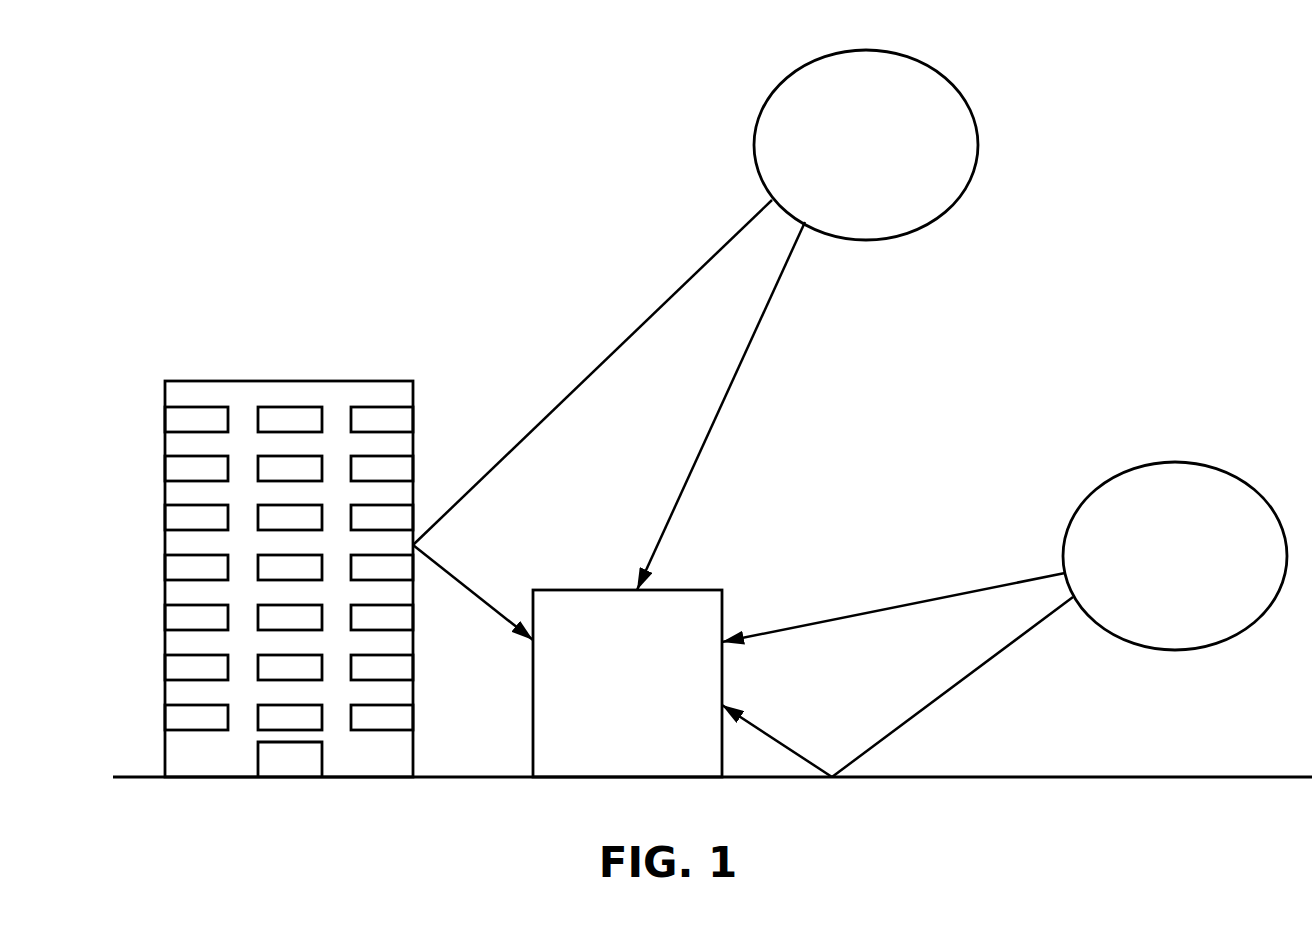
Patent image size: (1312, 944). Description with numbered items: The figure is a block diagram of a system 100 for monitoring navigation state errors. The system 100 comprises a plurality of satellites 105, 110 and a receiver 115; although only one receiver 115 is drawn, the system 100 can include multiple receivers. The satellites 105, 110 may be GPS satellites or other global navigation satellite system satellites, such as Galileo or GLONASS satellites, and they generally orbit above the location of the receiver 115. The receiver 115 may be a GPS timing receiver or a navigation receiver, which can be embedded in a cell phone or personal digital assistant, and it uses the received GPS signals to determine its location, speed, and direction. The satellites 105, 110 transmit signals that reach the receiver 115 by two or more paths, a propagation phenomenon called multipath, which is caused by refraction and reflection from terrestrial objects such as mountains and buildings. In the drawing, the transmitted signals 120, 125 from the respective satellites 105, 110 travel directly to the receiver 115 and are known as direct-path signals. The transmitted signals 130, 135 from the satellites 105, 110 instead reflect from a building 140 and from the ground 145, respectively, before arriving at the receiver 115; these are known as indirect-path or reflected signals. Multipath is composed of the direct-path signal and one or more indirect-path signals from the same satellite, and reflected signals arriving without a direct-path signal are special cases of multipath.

The system 100 is at (172, 170).
The satellite 105 is at (846, 175).
The satellite 110 is at (1154, 585).
The receiver 115 is at (706, 705).
The transmitted signal 120 is at (728, 385).
The transmitted signal 125 is at (902, 602).
The transmitted signal 130 is at (560, 403).
The transmitted signal 135 is at (938, 697).
The building 140 is at (302, 381).
The ground 145 is at (1243, 776).